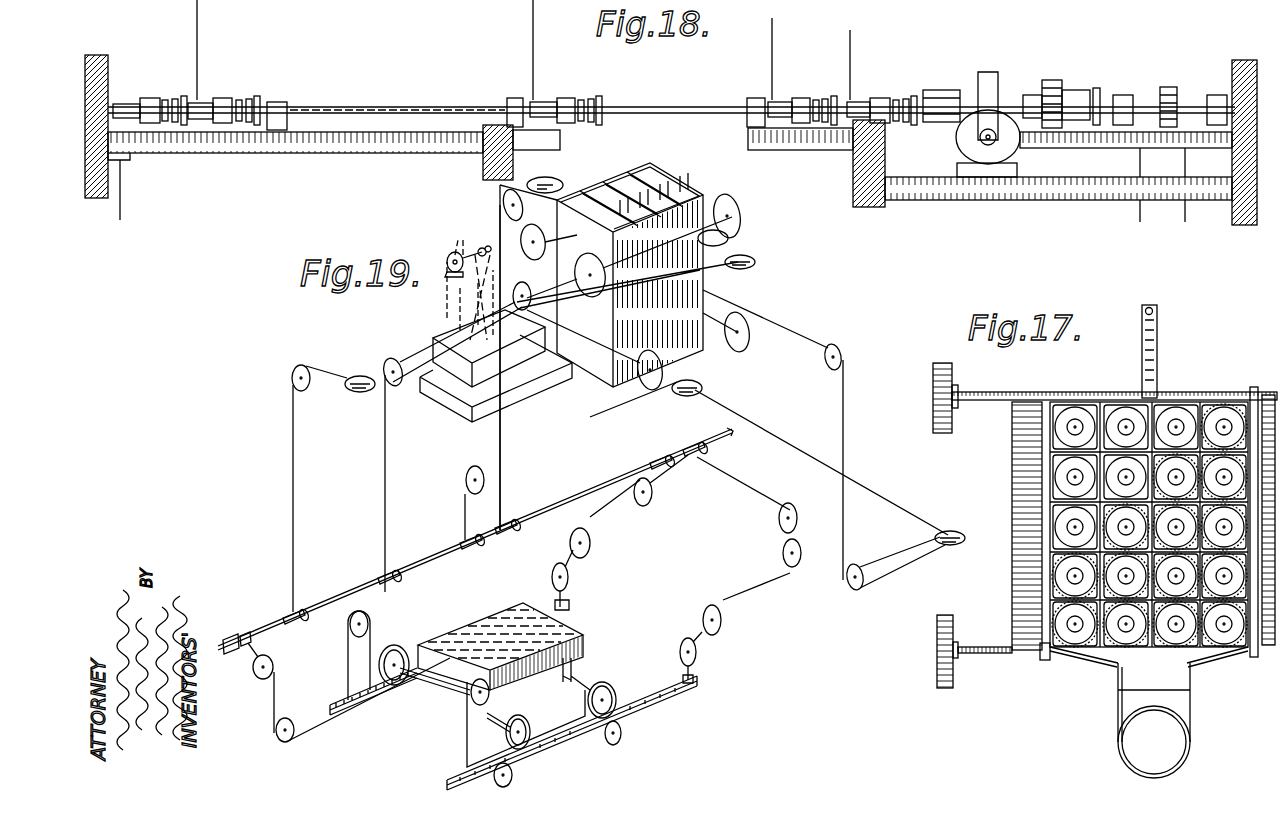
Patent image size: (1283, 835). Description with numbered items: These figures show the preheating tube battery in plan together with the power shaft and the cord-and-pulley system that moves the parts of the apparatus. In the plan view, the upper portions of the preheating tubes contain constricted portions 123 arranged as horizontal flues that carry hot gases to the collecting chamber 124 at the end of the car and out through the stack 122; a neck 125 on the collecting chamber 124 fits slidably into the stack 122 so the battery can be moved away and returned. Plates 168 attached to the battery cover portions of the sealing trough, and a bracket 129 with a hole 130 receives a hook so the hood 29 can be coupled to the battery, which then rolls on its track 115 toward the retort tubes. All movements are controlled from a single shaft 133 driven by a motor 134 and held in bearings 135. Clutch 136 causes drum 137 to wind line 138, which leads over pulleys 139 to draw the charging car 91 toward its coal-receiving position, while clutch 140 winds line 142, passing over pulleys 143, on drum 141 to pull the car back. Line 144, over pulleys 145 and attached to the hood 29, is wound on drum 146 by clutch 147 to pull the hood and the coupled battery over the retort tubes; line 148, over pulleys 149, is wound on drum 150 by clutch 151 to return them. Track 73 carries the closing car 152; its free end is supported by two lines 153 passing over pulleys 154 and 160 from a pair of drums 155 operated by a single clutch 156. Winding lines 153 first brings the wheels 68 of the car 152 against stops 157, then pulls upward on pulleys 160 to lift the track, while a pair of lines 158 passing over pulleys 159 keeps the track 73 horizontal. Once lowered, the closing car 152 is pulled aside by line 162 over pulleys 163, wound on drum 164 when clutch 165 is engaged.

In FIG. 19, the hood 29 is at (522, 375).
In FIG. 19, the wheels 68 is at (588, 705).
In FIG. 19, the track 73 is at (685, 692).
In FIG. 19, the charging car 91 is at (690, 205).
In FIG. 17, the gear 115 is at (952, 418).
In FIG. 17, the stack 122 is at (1192, 742).
In FIG. 17, the constricted portions 123 is at (1196, 410).
In FIG. 17, the collecting chamber 124 is at (1197, 668).
In FIG. 17, the neck 125 is at (1120, 680).
In FIG. 17, the bracket 129 is at (1158, 340).
In FIG. 17, the hole 130 is at (1153, 308).
In FIG. 18, the shaft 133 is at (362, 100).
In FIG. 19, the shaft 133 is at (590, 492).
In FIG. 18, the motor 134 is at (958, 143).
In FIG. 18, the bearings 135 is at (283, 100).
In FIG. 18, the clutch 136 is at (826, 97).
In FIG. 19, the clutch 136 is at (480, 547).
In FIG. 18, the drum 137 is at (782, 100).
In FIG. 19, the drum 137 is at (470, 553).
In FIG. 19, the line 138 is at (465, 520).
In FIG. 19, the pulleys 139 is at (842, 352).
In FIG. 18, the clutch 140 is at (930, 92).
In FIG. 19, the clutch 140 is at (570, 540).
In FIG. 18, the drum 141 is at (866, 100).
In FIG. 19, the drum 141 is at (510, 525).
In FIG. 19, the line 142 is at (500, 450).
In FIG. 19, the pulleys 143 is at (503, 207).
In FIG. 19, the line 144 is at (292, 483).
In FIG. 19, the pulleys 145 is at (292, 378).
In FIG. 18, the drum 146 is at (206, 100).
In FIG. 19, the drum 146 is at (290, 616).
In FIG. 18, the clutch 147 is at (250, 97).
In FIG. 19, the clutch 147 is at (306, 608).
In FIG. 19, the line 148 is at (728, 245).
In FIG. 19, the pulleys 149 is at (735, 232).
In FIG. 19, the drum 150 is at (383, 576).
In FIG. 19, the clutch 151 is at (398, 569).
In FIG. 19, the closing car 152 is at (575, 625).
In FIG. 19, the lines 153 is at (623, 505).
In FIG. 19, the pulleys 154 is at (653, 493).
In FIG. 18, the drums 155 is at (1188, 86).
In FIG. 19, the drums 155 is at (676, 455).
In FIG. 18, the clutch 156 is at (1066, 88).
In FIG. 19, the clutch 156 is at (695, 460).
In FIG. 19, the stops 157 is at (610, 690).
In FIG. 19, the lines 158 is at (365, 705).
In FIG. 19, the pulleys 159 is at (478, 700).
In FIG. 19, the pulleys 160 is at (570, 577).
In FIG. 19, the line 162 is at (318, 726).
In FIG. 19, the pulleys 163 is at (275, 662).
In FIG. 18, the drum 164 is at (124, 102).
In FIG. 19, the drum 164 is at (230, 638).
In FIG. 18, the clutch 165 is at (160, 96).
In FIG. 19, the clutch 165 is at (246, 632).
In FIG. 17, the plates 168 is at (1014, 494).